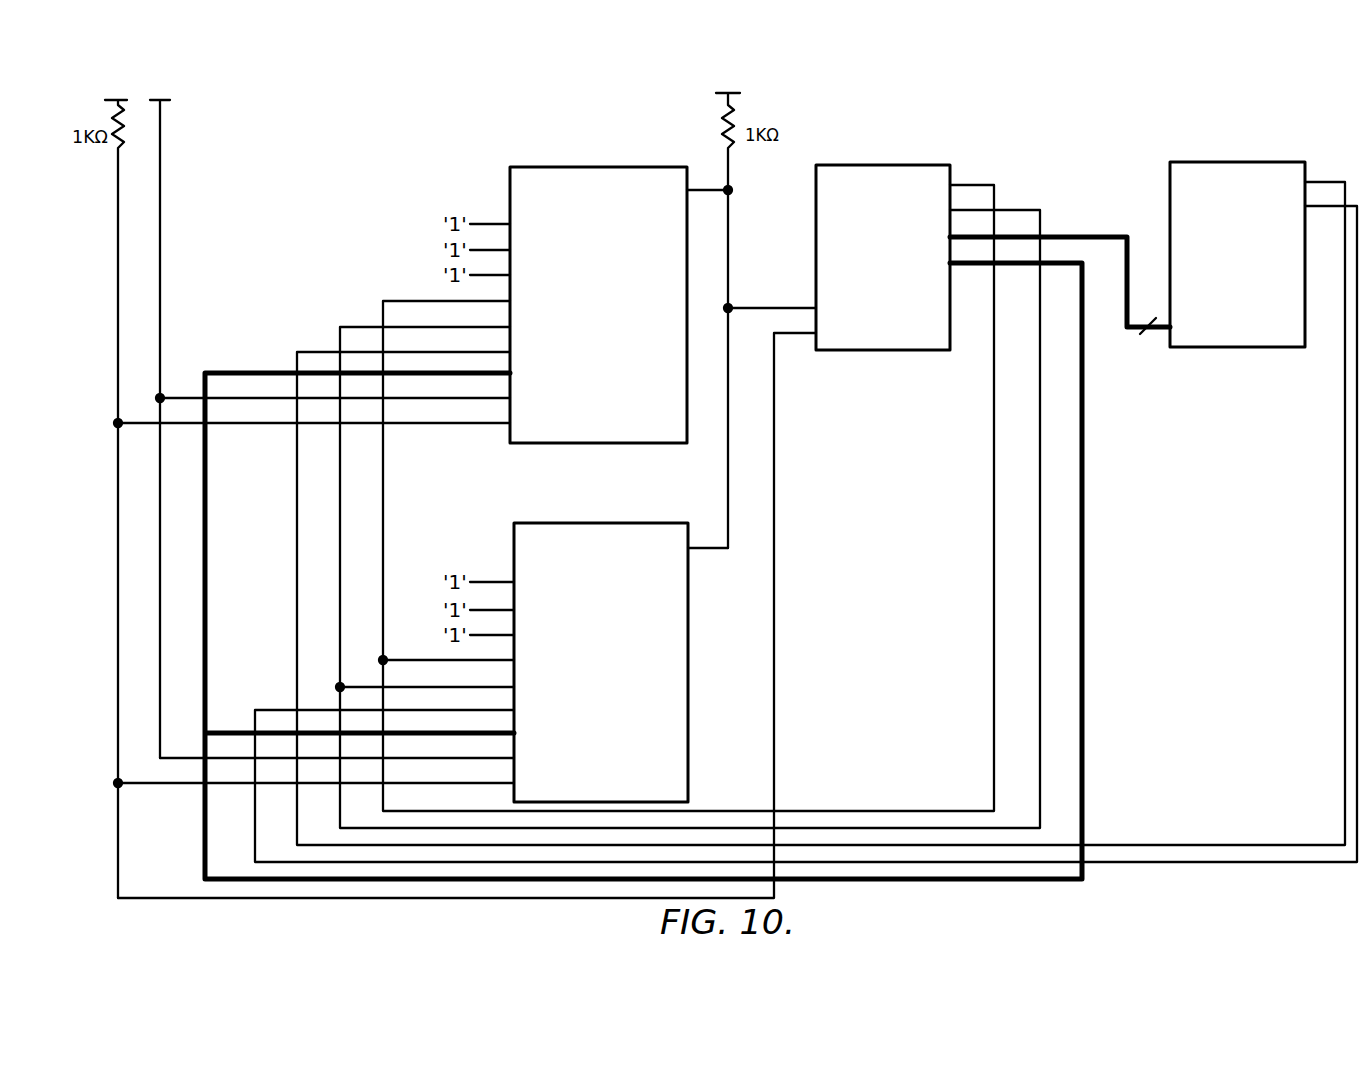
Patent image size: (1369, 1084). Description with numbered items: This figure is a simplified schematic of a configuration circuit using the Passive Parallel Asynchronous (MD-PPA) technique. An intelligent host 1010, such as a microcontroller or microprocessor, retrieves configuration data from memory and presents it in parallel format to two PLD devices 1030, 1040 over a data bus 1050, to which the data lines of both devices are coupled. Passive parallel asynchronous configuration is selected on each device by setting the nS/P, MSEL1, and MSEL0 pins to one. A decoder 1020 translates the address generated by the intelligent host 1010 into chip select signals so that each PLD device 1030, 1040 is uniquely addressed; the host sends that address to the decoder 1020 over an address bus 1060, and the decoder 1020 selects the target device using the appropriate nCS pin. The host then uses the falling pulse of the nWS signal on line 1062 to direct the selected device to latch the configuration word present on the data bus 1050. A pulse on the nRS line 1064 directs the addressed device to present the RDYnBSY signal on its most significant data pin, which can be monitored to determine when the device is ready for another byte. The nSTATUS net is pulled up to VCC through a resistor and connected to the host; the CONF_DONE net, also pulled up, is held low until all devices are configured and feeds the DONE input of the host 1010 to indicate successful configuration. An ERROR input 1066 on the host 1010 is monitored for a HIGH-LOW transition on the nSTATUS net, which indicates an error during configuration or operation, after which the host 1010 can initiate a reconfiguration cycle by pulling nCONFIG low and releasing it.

The intelligent host 1010 is at (938, 165).
The decoder 1020 is at (1295, 162).
The PLD device 1030 is at (652, 167).
The PLD device 1040 is at (525, 533).
The data bus 1050 is at (1084, 502).
The address bus 1060 is at (1066, 233).
The nWS line 1062 is at (994, 552).
The nRS line 1064 is at (1040, 561).
The ERROR input 1066 is at (796, 335).